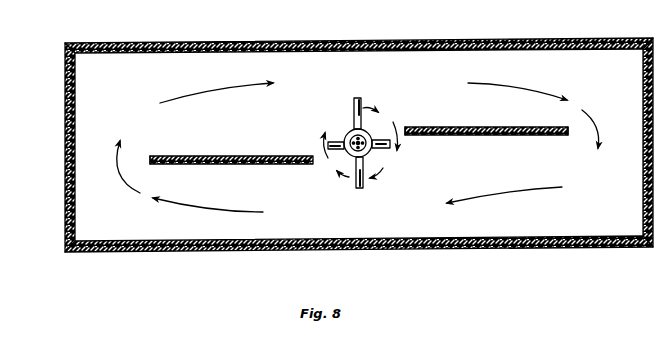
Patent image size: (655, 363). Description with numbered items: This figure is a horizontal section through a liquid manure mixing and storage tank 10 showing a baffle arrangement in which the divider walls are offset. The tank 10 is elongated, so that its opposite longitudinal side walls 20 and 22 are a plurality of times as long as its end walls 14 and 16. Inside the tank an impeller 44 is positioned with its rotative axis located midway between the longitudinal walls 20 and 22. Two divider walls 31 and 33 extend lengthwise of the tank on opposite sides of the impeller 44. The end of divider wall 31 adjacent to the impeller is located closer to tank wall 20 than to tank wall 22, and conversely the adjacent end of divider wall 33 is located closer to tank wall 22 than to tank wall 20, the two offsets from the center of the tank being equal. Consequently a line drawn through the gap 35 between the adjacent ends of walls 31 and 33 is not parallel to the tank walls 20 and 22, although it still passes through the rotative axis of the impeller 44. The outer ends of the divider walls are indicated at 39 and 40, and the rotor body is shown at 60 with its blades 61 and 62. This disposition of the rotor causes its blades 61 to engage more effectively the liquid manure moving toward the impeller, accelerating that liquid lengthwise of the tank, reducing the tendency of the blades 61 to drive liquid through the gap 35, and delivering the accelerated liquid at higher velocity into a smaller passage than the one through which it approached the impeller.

The liquid manure mixing and storage tank 10 is at (359, 129).
The end wall 14 is at (119, 167).
The end wall 16 is at (643, 180).
The side wall 20 is at (452, 239).
The side wall 22 is at (570, 50).
The divider wall 31 is at (217, 156).
The divider wall 33 is at (493, 135).
The gap 35 is at (405, 127).
The outer end of left baffle plate 39 is at (150, 159).
The outer end of right baffle plate 40 is at (568, 134).
The impeller 44 is at (371, 128).
The rotor 60 is at (360, 138).
The blades 61 is at (363, 100).
The horizontal rotor blades 62 is at (338, 137).